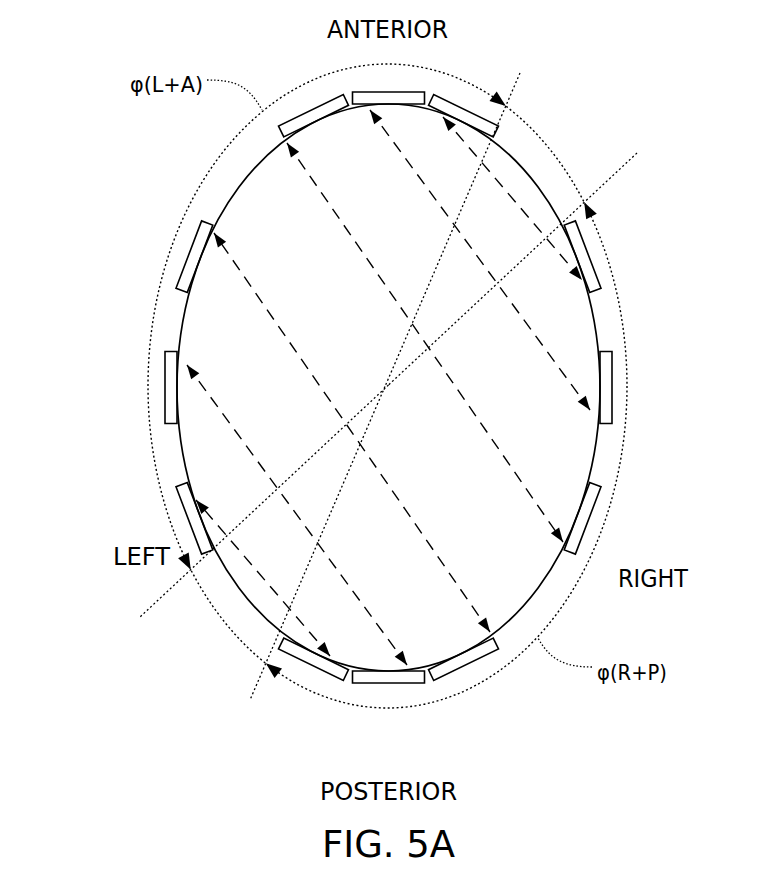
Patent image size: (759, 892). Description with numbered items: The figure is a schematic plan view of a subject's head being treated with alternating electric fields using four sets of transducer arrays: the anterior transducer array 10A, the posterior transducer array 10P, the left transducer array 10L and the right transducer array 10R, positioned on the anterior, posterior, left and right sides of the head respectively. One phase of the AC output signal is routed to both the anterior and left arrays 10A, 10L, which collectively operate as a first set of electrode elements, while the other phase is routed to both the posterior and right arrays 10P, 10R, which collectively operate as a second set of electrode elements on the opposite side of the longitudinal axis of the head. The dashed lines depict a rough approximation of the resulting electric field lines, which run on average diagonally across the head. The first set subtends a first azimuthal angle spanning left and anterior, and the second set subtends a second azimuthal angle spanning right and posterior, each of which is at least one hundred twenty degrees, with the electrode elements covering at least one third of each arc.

The anterior transducer array 10A is at (476, 58).
The posterior transducer array 10P is at (310, 740).
The right transducer array 10R is at (620, 200).
The left transducer array 10L is at (153, 198).